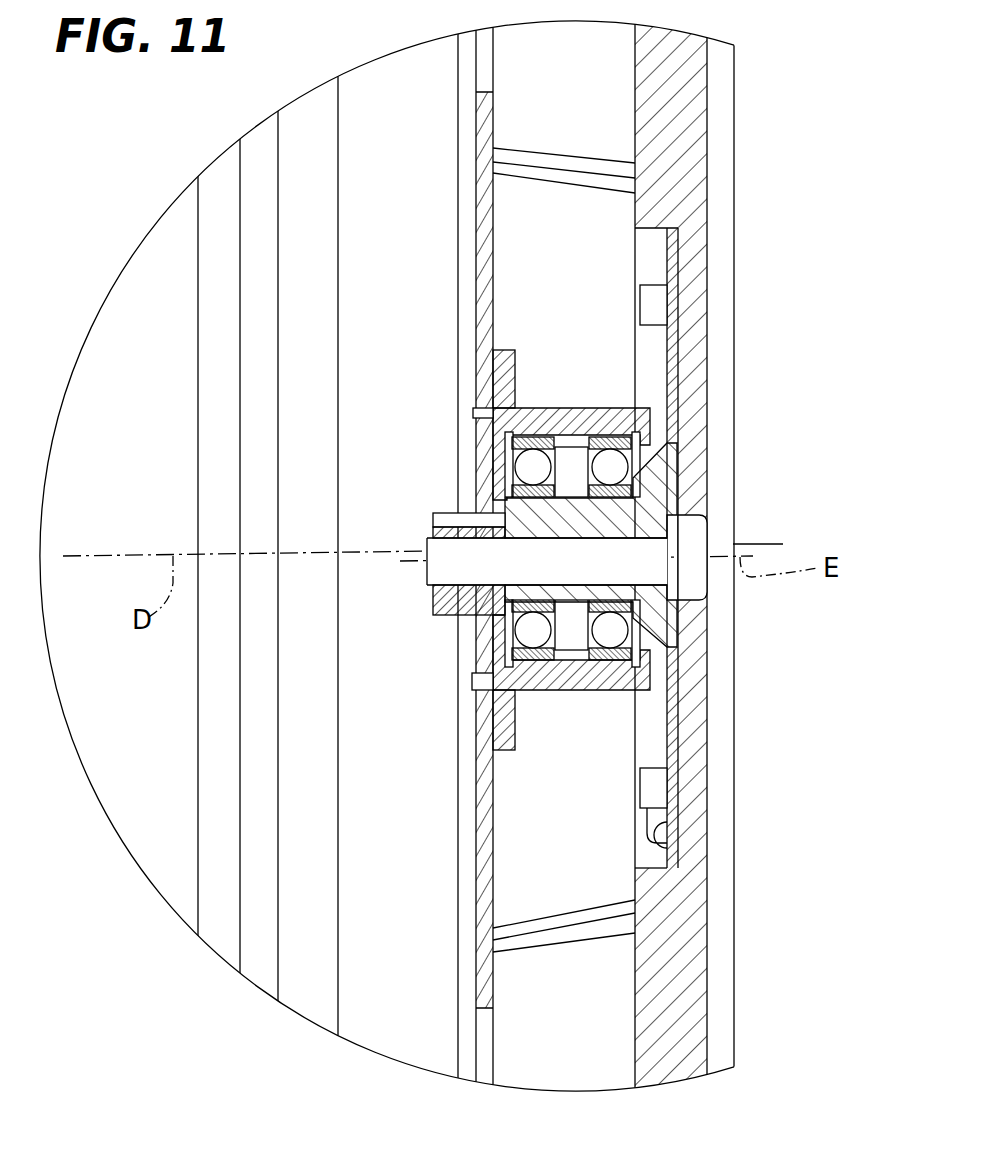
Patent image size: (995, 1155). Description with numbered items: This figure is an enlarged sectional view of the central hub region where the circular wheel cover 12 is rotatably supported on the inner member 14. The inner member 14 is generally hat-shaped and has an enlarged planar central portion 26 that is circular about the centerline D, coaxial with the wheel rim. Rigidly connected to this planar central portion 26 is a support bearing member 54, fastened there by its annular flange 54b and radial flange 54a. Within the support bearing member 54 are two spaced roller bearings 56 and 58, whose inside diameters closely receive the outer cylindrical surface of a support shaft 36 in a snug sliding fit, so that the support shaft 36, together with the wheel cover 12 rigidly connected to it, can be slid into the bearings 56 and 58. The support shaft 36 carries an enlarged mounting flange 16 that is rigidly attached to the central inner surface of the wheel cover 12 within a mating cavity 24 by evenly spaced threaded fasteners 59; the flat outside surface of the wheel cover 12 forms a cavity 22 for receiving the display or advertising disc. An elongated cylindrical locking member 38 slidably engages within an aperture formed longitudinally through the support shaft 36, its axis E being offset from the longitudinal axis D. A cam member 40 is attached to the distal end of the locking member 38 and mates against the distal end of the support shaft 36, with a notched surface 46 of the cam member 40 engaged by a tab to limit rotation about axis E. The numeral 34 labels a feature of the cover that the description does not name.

The circular wheel cover 12 is at (742, 95).
The inner member 14 is at (471, 851).
The enlarged mounting flange 16 is at (678, 742).
The cavity 22 is at (720, 282).
The mating cavity 24 is at (684, 857).
The planar central portion 26 is at (480, 267).
The magnet 34 is at (704, 786).
The support shaft 36 is at (618, 529).
The locking member 38 is at (427, 575).
The cam member 40 is at (441, 617).
The notched surface 46 is at (444, 513).
The support bearing member 54 is at (567, 408).
The radial flange 54a is at (515, 373).
The annular flange 54b is at (473, 415).
The roller bearing 56 is at (562, 633).
The roller bearing 58 is at (582, 632).
The threaded fasteners 59 is at (642, 836).